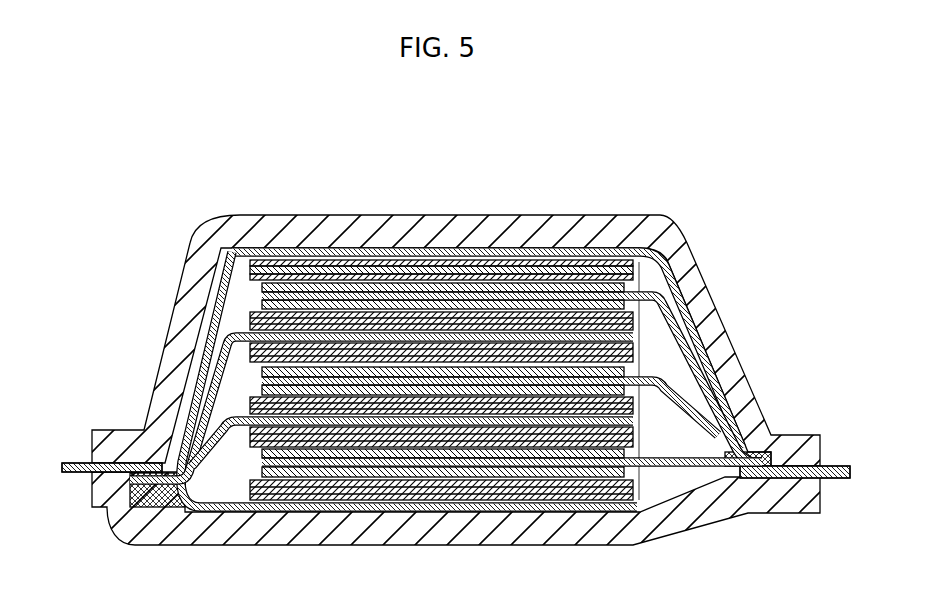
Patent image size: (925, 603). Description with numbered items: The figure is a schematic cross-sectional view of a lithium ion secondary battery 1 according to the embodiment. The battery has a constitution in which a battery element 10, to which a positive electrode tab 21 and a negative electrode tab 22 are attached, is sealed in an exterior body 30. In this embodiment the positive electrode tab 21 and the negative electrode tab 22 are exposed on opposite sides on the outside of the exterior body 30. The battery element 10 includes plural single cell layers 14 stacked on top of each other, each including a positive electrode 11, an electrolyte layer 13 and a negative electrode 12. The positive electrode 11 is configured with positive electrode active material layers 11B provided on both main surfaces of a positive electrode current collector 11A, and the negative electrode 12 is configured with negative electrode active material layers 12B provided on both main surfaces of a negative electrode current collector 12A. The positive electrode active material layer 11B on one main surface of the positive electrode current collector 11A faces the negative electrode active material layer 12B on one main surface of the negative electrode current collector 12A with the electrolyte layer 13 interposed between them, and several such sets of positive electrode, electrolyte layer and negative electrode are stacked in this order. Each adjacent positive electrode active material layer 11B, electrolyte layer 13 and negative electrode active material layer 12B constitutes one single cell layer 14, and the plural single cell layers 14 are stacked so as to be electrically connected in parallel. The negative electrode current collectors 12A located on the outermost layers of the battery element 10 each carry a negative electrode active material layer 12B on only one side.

The lithium ion secondary battery 1 is at (170, 165).
The battery element 10 is at (648, 420).
The positive electrode 11 is at (395, 148).
The positive electrode current collector 11A is at (440, 303).
The positive electrode active material layer 11B is at (349, 275).
The negative electrode 12 is at (540, 148).
The negative electrode current collector 12A is at (570, 340).
The negative electrode active material layer 12B is at (258, 258).
The electrolyte layer 13 is at (317, 265).
The single cell layer 14 is at (235, 148).
The positive electrode tab 21 is at (826, 468).
The negative electrode tab 22 is at (80, 463).
The exterior body 30 is at (796, 435).